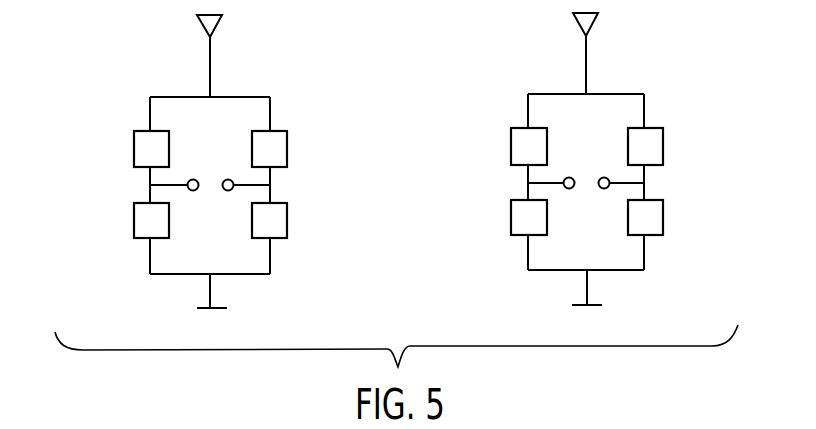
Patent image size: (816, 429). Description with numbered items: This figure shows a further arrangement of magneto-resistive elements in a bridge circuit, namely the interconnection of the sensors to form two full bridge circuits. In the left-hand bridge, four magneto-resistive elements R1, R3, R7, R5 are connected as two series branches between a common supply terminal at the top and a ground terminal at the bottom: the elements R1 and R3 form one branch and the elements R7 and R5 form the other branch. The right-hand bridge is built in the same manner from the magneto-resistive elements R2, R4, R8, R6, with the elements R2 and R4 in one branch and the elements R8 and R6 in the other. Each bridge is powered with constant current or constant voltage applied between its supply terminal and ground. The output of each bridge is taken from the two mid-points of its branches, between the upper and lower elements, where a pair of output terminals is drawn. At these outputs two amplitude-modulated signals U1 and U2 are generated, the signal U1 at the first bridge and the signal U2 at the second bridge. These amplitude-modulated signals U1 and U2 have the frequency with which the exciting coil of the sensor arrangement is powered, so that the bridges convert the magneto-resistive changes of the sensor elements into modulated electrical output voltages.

The magneto-resistive element R1 is at (134, 153).
The magneto-resistive element R2 is at (511, 148).
The magneto-resistive element R3 is at (134, 220).
The magneto-resistive element R4 is at (511, 212).
The magneto-resistive element R5 is at (287, 218).
The magneto-resistive element R6 is at (663, 218).
The magneto-resistive element R7 is at (288, 152).
The magneto-resistive element R8 is at (663, 150).
The amplitude-modulated signal U1 is at (210, 205).
The amplitude-modulated signal U2 is at (586, 204).